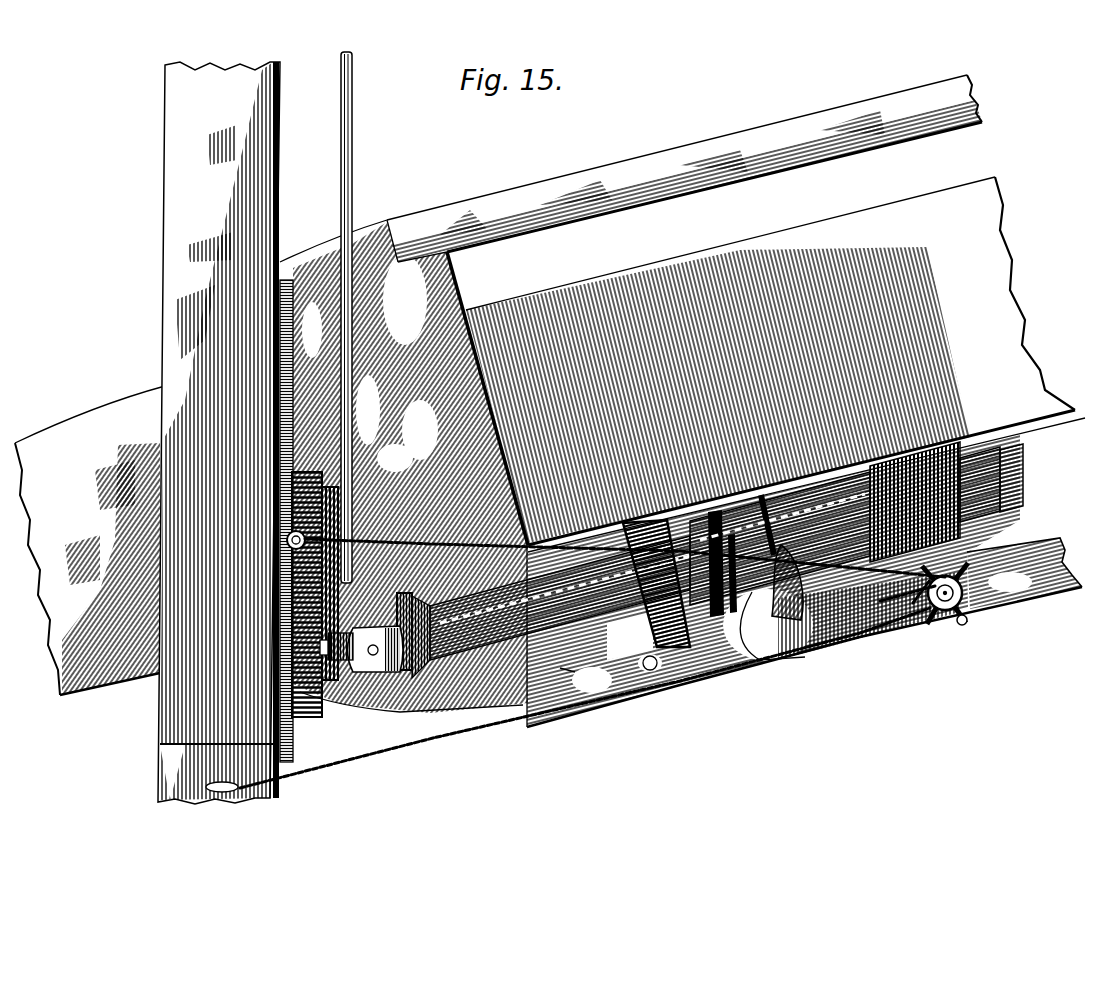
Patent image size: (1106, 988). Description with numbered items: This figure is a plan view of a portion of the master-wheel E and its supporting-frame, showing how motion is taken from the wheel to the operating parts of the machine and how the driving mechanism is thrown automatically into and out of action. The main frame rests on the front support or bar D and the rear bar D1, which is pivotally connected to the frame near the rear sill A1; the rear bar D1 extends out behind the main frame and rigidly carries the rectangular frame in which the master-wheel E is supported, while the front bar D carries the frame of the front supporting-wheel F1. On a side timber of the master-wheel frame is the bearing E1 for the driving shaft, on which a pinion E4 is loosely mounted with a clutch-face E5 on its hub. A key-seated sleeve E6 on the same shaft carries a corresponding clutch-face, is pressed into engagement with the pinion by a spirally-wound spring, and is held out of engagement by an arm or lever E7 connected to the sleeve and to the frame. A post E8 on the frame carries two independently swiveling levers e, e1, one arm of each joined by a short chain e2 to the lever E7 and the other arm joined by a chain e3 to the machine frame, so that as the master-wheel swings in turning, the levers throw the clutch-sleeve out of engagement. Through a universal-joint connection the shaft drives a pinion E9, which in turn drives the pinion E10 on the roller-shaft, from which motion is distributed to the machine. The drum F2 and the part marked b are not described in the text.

The rear sill A1 is at (165, 422).
The rear bar D1 is at (271, 466).
The front support or bar D is at (806, 572).
The master-wheel E is at (731, 310).
The bearing E1 is at (1024, 573).
The pinion E4 is at (690, 523).
The clutch-face E5 is at (722, 518).
The key-seated sleeve E6 is at (576, 680).
The arm or lever E7 is at (772, 607).
The post E8 is at (946, 595).
The pinion E9 is at (314, 703).
The pinion E10 is at (283, 563).
The front supporting-wheel F1 is at (560, 598).
The drum F2 is at (780, 538).
The bolt b is at (650, 664).
The swiveling or oscillating lever e is at (921, 641).
The swiveling or oscillating lever e1 is at (968, 621).
The short chain e2 is at (906, 591).
The chain e3 is at (742, 670).